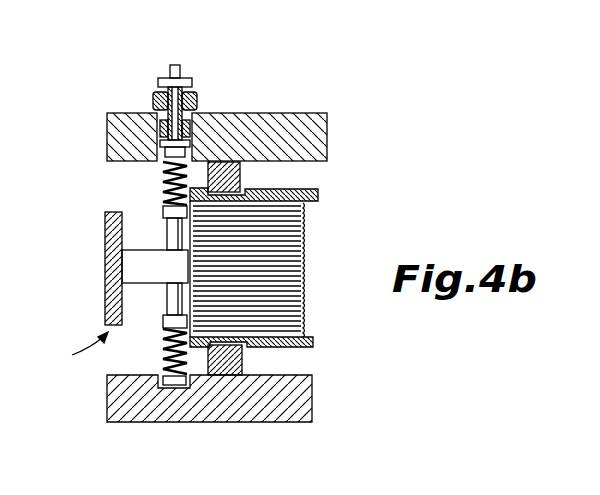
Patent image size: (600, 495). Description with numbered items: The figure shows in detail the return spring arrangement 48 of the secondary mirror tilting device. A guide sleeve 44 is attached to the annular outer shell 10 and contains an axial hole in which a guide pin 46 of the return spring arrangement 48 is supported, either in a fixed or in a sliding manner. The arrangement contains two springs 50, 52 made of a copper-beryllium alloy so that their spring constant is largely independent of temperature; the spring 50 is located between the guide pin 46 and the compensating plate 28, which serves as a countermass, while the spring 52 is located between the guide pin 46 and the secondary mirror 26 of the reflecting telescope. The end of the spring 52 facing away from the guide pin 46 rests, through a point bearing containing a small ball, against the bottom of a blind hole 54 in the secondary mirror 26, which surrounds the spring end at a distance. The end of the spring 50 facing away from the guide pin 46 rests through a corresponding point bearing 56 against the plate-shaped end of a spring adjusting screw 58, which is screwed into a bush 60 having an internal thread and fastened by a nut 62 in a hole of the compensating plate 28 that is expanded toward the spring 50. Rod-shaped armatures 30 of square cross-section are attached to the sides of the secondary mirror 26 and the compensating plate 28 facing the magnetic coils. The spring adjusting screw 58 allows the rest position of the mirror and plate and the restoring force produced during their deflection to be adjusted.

The annular outer shell 10 is at (110, 262).
The secondary mirror 26 is at (133, 410).
The compensating plate 28 is at (128, 131).
The armature 30 is at (236, 356).
The guide sleeve 44 is at (140, 279).
The guide pin 46 is at (172, 236).
The return spring arrangement 48 is at (77, 351).
The spring 50 is at (164, 176).
The spring 52 is at (167, 352).
The blind hole 54 is at (160, 382).
The point bearing 56 is at (160, 144).
The spring adjusting screw 58 is at (160, 92).
The bush 60 is at (194, 96).
The nut 62 is at (155, 103).